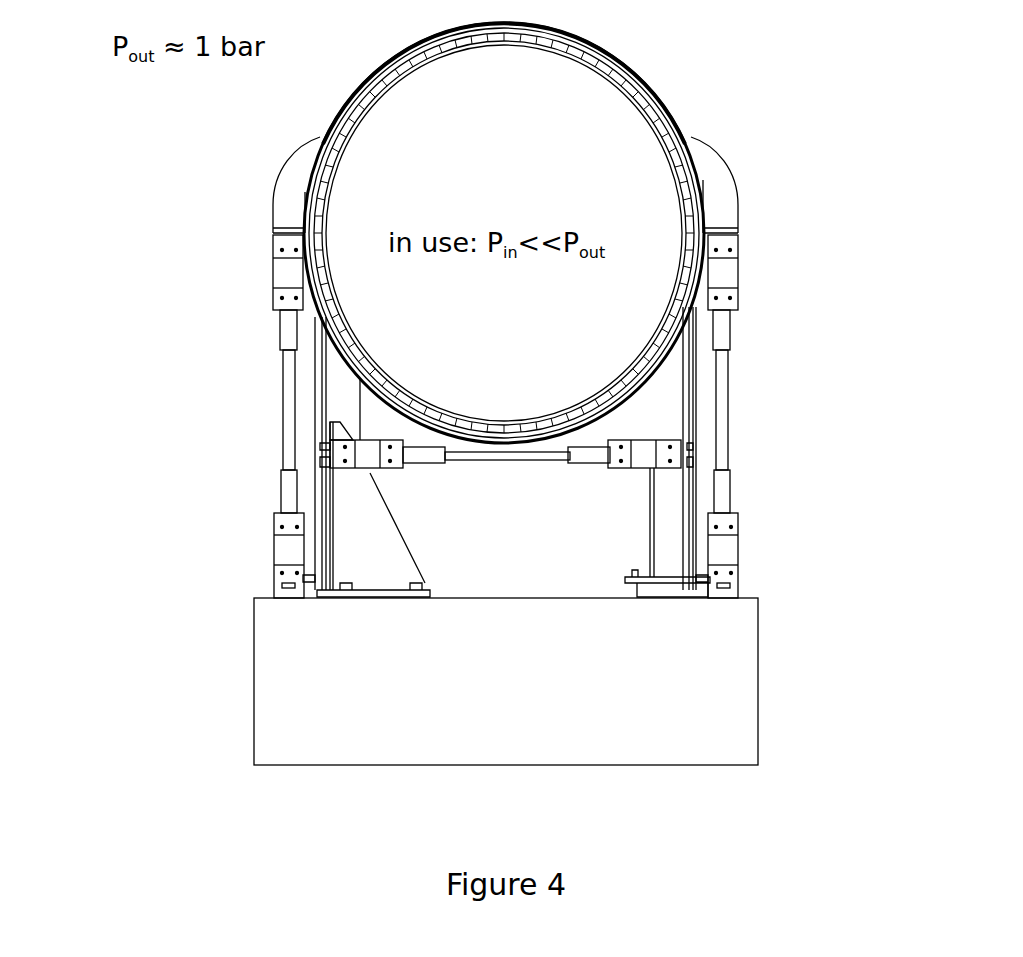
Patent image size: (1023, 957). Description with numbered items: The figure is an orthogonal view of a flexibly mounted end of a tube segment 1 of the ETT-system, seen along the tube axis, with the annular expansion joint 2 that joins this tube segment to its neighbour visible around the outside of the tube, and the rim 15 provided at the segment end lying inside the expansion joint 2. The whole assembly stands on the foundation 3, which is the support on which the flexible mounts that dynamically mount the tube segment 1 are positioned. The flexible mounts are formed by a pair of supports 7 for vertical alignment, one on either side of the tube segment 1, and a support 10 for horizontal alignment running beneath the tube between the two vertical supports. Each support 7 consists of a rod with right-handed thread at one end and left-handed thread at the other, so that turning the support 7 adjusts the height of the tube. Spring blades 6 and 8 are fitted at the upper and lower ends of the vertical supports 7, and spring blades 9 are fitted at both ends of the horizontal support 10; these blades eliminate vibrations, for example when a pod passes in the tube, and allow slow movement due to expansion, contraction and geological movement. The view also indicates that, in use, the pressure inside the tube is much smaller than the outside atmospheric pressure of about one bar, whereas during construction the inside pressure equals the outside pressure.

The tube segment 1 is at (698, 180).
The expansion joint 2 is at (678, 102).
The foundation 3 is at (759, 685).
The spring blade 6 is at (272, 268).
The support for vertical alignment 7 is at (282, 408).
The spring blade 8 is at (273, 548).
The spring blade 9 is at (370, 471).
The support for horizontal alignment 10 is at (502, 461).
The rim 15 is at (653, 402).